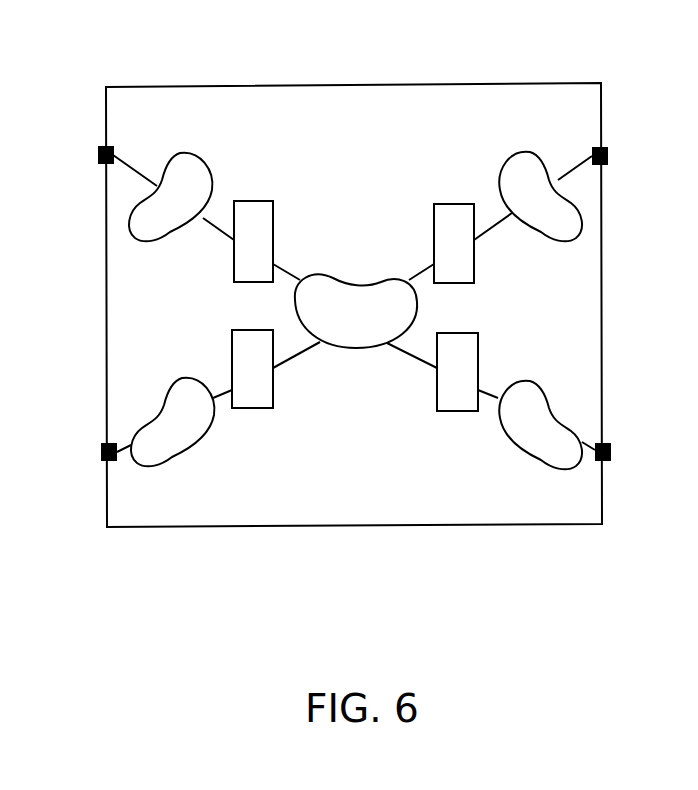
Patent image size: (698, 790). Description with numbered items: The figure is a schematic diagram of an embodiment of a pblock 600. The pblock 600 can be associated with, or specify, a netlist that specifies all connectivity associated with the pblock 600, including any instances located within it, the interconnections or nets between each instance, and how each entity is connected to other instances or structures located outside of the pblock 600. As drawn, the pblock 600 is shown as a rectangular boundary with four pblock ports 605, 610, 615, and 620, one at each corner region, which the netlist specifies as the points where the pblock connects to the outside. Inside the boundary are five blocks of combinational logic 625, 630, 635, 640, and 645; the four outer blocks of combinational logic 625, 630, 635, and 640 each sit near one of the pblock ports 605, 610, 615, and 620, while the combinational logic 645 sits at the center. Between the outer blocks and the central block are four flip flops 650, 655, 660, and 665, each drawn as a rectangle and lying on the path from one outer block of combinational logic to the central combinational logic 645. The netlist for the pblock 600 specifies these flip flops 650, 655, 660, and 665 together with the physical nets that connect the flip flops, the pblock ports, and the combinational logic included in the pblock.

The pblock 600 is at (518, 85).
The pblock port 605 is at (98, 148).
The pblock port 610 is at (608, 152).
The pblock port 615 is at (611, 450).
The pblock port 620 is at (102, 448).
The combinational logic 625 is at (170, 197).
The combinational logic 630 is at (540, 197).
The combinational logic 635 is at (172, 422).
The combinational logic 640 is at (540, 425).
The combinational logic 645 is at (356, 311).
The flip flop 650 is at (253, 202).
The flip flop 655 is at (457, 204).
The flip flop 660 is at (252, 408).
The flip flop 665 is at (458, 411).